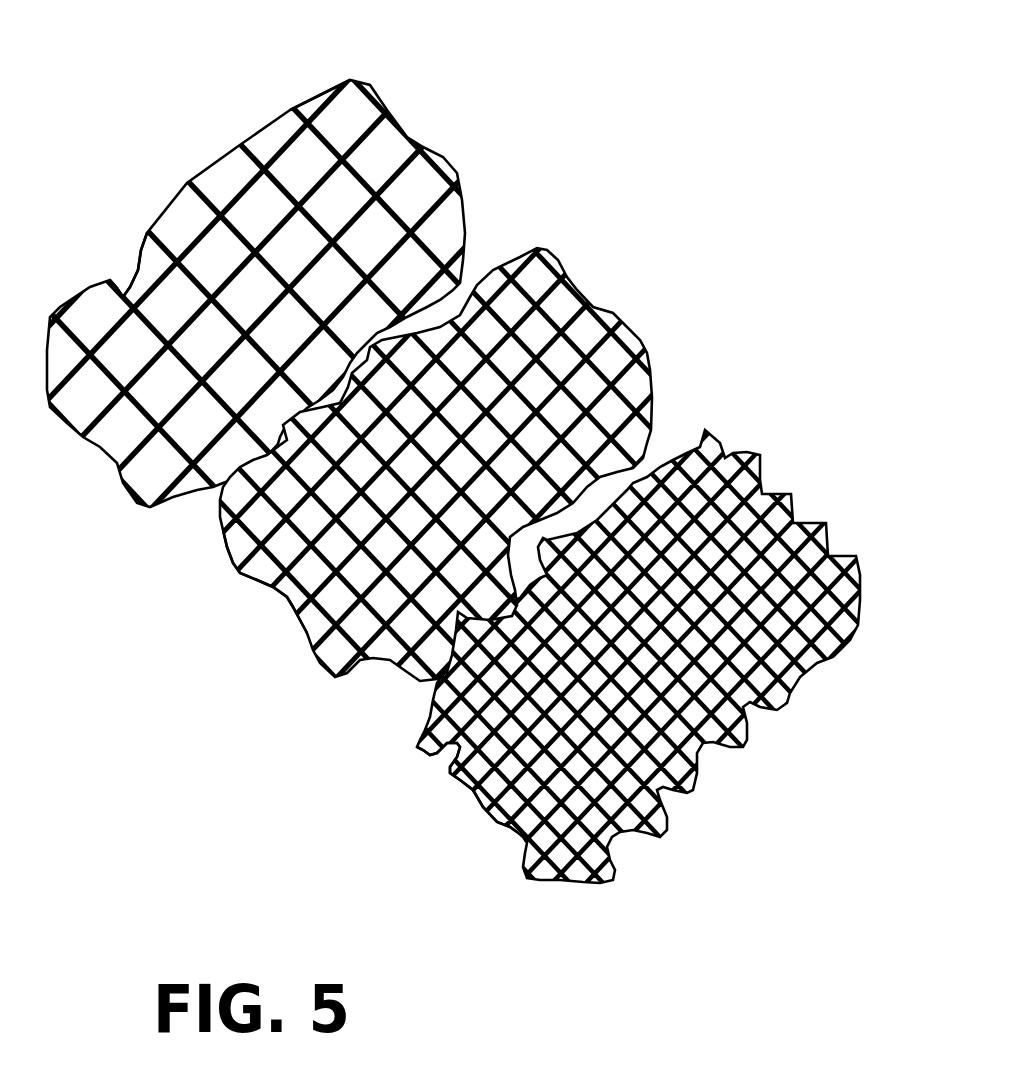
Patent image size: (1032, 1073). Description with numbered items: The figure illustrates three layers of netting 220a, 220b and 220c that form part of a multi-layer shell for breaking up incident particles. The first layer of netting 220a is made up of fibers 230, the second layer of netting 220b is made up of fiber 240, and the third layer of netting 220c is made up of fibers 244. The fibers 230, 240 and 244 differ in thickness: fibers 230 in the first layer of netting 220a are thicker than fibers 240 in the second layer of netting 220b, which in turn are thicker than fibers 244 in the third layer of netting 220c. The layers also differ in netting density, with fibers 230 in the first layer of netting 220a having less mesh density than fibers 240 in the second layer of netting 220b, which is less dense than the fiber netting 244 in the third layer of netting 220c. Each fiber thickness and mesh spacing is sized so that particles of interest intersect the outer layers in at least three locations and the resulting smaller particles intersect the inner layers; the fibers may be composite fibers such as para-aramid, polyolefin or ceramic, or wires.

The first layer of netting 220a is at (503, 151).
The second layer of netting 220b is at (651, 263).
The third layer of netting 220c is at (832, 443).
The fibers 230 is at (335, 92).
The fiber 240 is at (237, 530).
The fibers 244 is at (518, 773).